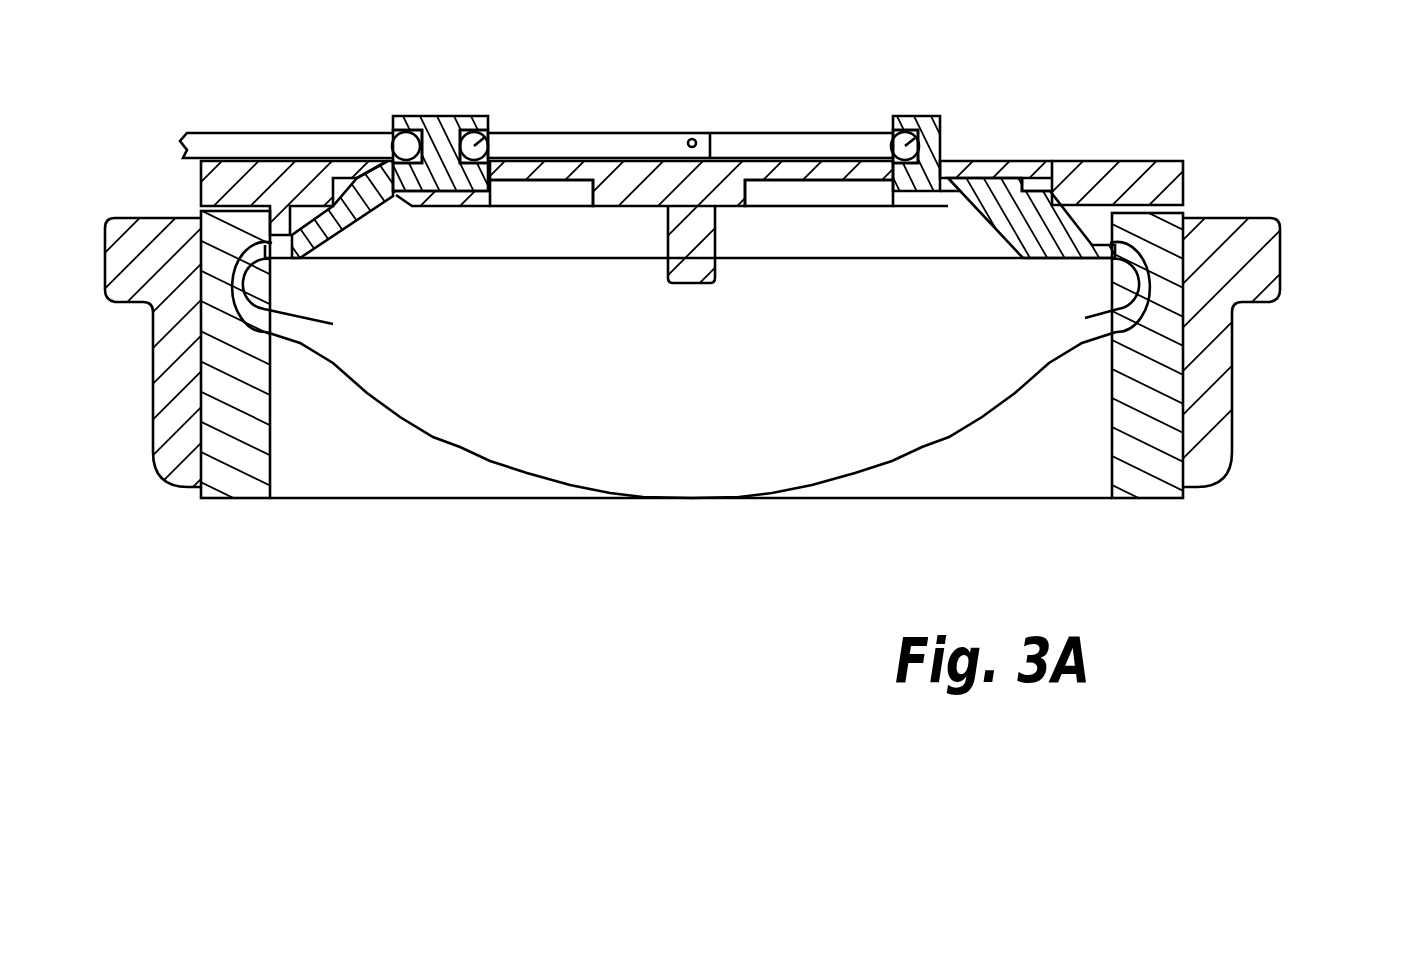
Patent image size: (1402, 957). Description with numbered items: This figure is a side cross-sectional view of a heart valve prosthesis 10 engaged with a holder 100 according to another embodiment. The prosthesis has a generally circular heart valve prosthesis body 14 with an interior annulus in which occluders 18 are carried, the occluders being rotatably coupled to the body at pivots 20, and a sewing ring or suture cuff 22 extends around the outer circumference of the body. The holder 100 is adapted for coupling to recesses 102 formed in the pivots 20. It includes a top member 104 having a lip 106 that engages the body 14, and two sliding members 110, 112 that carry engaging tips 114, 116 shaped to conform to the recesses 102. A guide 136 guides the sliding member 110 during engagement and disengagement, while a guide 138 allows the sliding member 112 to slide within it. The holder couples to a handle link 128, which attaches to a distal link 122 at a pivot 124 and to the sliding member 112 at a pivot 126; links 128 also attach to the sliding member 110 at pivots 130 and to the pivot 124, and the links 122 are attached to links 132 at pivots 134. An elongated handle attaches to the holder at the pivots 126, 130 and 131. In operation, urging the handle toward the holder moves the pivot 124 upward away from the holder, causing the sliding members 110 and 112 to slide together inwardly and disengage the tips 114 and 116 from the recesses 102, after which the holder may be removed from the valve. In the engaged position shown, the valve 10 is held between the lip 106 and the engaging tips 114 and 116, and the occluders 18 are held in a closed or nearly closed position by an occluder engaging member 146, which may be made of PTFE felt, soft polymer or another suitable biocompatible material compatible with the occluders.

The heart valve prosthesis 10 is at (1301, 132).
The heart valve prosthesis body 14 is at (233, 473).
The occluders 18 is at (768, 458).
The pivots 20 is at (691, 293).
The sewing ring or suture cuff 22 is at (168, 362).
The holder 100 is at (972, 158).
The recesses 102 is at (203, 217).
The top member 104 is at (1087, 180).
The lip 106 is at (226, 160).
The sliding member 110 is at (455, 104).
The sliding member 112 is at (913, 104).
The engaging tip 114 is at (267, 253).
The engaging tip 116 is at (1130, 233).
The distal link 122 is at (770, 132).
The pivot 124 is at (697, 131).
The pivot 126 is at (900, 129).
The handle link 128 is at (652, 124).
The pivot 130 is at (486, 140).
The pivot 131 is at (406, 146).
The links 132 is at (399, 113).
The pivots 134 is at (275, 131).
The guide 136 is at (517, 197).
The guide 138 is at (770, 187).
The occluder engaging member 146 is at (683, 273).